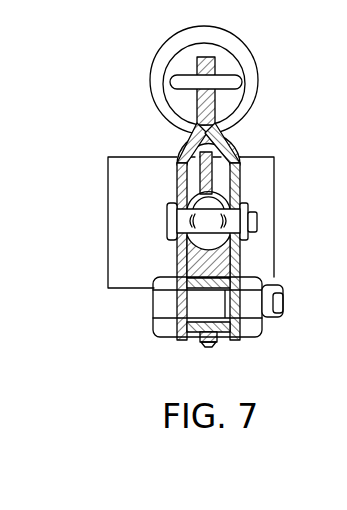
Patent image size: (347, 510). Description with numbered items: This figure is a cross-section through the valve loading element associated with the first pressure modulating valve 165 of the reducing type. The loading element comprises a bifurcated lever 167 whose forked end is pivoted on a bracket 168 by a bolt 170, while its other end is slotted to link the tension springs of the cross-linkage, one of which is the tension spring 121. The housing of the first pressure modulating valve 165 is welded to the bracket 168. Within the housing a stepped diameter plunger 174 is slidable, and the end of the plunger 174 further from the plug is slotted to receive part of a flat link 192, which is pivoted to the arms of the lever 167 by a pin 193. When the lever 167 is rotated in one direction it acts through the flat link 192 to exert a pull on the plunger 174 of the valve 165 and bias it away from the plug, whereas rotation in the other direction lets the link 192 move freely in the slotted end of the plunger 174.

The tension spring 121 is at (253, 79).
The bracket 168 is at (233, 140).
The flat link 192 is at (177, 195).
The pin 193 is at (171, 212).
The bifurcated lever 167 is at (177, 253).
The stepped diameter plunger 174 is at (240, 251).
The first pressure modulating valve 165 is at (132, 291).
The bolt 170 is at (166, 332).